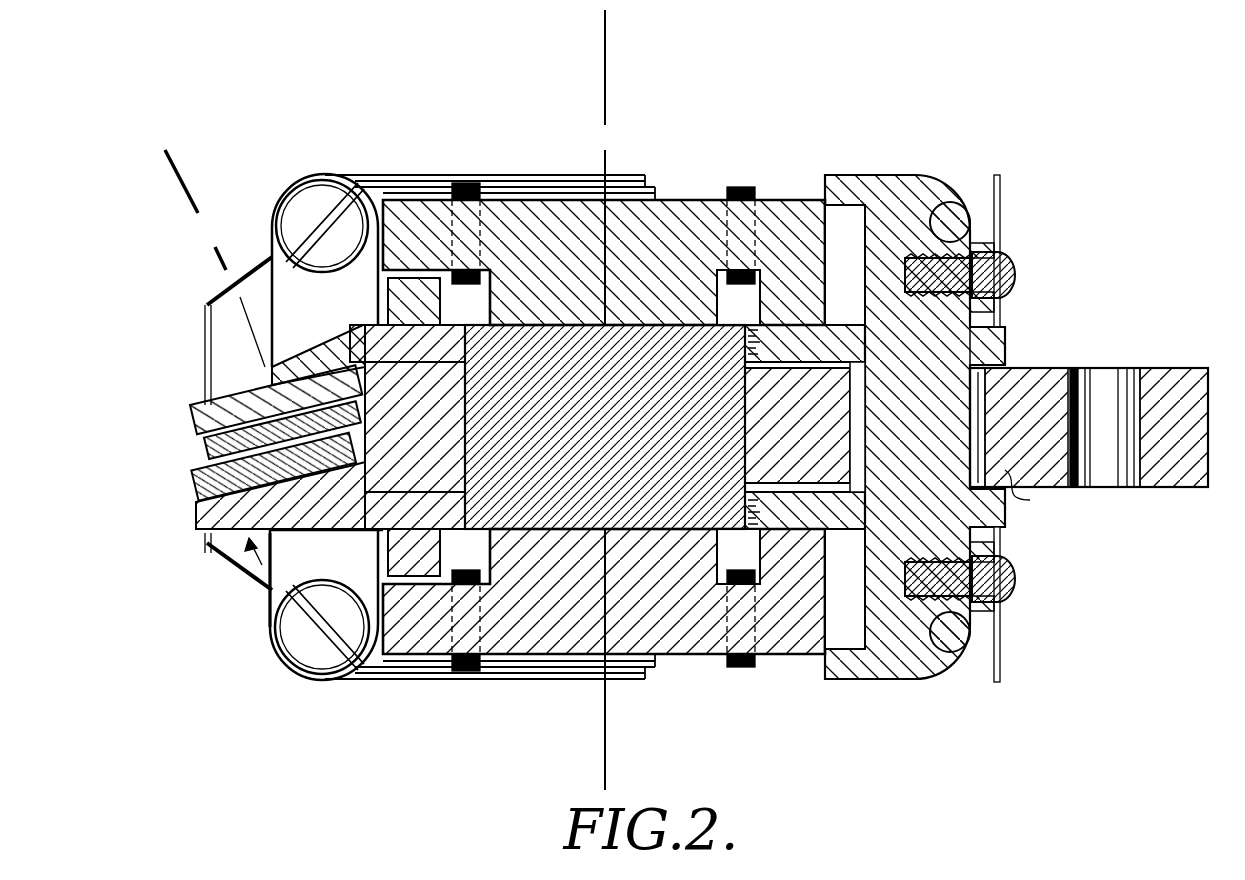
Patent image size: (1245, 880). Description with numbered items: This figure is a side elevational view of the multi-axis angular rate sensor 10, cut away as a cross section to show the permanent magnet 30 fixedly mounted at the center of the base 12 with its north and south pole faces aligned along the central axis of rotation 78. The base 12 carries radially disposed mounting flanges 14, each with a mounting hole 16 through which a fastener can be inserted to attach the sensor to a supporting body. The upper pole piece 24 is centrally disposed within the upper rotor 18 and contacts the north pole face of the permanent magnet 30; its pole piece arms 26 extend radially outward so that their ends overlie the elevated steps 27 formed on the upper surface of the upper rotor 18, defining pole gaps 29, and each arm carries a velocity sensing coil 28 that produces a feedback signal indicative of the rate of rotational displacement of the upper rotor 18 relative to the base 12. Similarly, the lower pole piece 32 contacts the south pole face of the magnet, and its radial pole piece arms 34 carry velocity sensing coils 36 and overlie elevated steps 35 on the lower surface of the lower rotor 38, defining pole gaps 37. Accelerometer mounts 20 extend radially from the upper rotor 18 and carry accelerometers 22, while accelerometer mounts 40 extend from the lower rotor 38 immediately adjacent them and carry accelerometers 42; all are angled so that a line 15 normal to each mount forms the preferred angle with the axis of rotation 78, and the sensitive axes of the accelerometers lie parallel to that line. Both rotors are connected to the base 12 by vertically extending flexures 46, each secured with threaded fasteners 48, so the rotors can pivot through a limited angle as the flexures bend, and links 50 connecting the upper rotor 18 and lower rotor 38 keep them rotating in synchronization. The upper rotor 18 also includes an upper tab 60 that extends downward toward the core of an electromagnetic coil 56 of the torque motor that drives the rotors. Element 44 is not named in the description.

The rate sensor 10 is at (232, 122).
The base 12 is at (196, 418).
The mounting flanges 14 is at (1160, 368).
The line 15 is at (187, 200).
The mounting hole 16 is at (1110, 457).
The upper rotor 18 is at (225, 372).
The accelerometer mounts 20 is at (190, 425).
The accelerometer 22 is at (205, 458).
The upper pole piece 24 is at (683, 232).
The pole piece arms 26 is at (406, 230).
The elevated steps 27 is at (362, 315).
The velocity sensing coil 28 is at (466, 185).
The pole gaps 29 is at (378, 240).
The permanent magnet 30 is at (603, 353).
The lower pole piece 32 is at (650, 610).
The radial pole piece arms 34 is at (395, 662).
The elevated step 35 is at (272, 592).
The velocity sensing coils 36 is at (455, 672).
The pole gap 37 is at (375, 655).
The lower rotor 38 is at (1020, 525).
The accelerometer mounts 40 is at (202, 507).
The accelerometer 42 is at (195, 488).
The inclined wall 44 is at (247, 563).
The flexures 46 is at (250, 288).
The threaded fasteners 48 is at (298, 208).
The links 50 is at (212, 300).
The electromagnetic coil 56 is at (1022, 462).
The upper tab 60 is at (1004, 342).
The central axis of rotation 78 is at (607, 23).